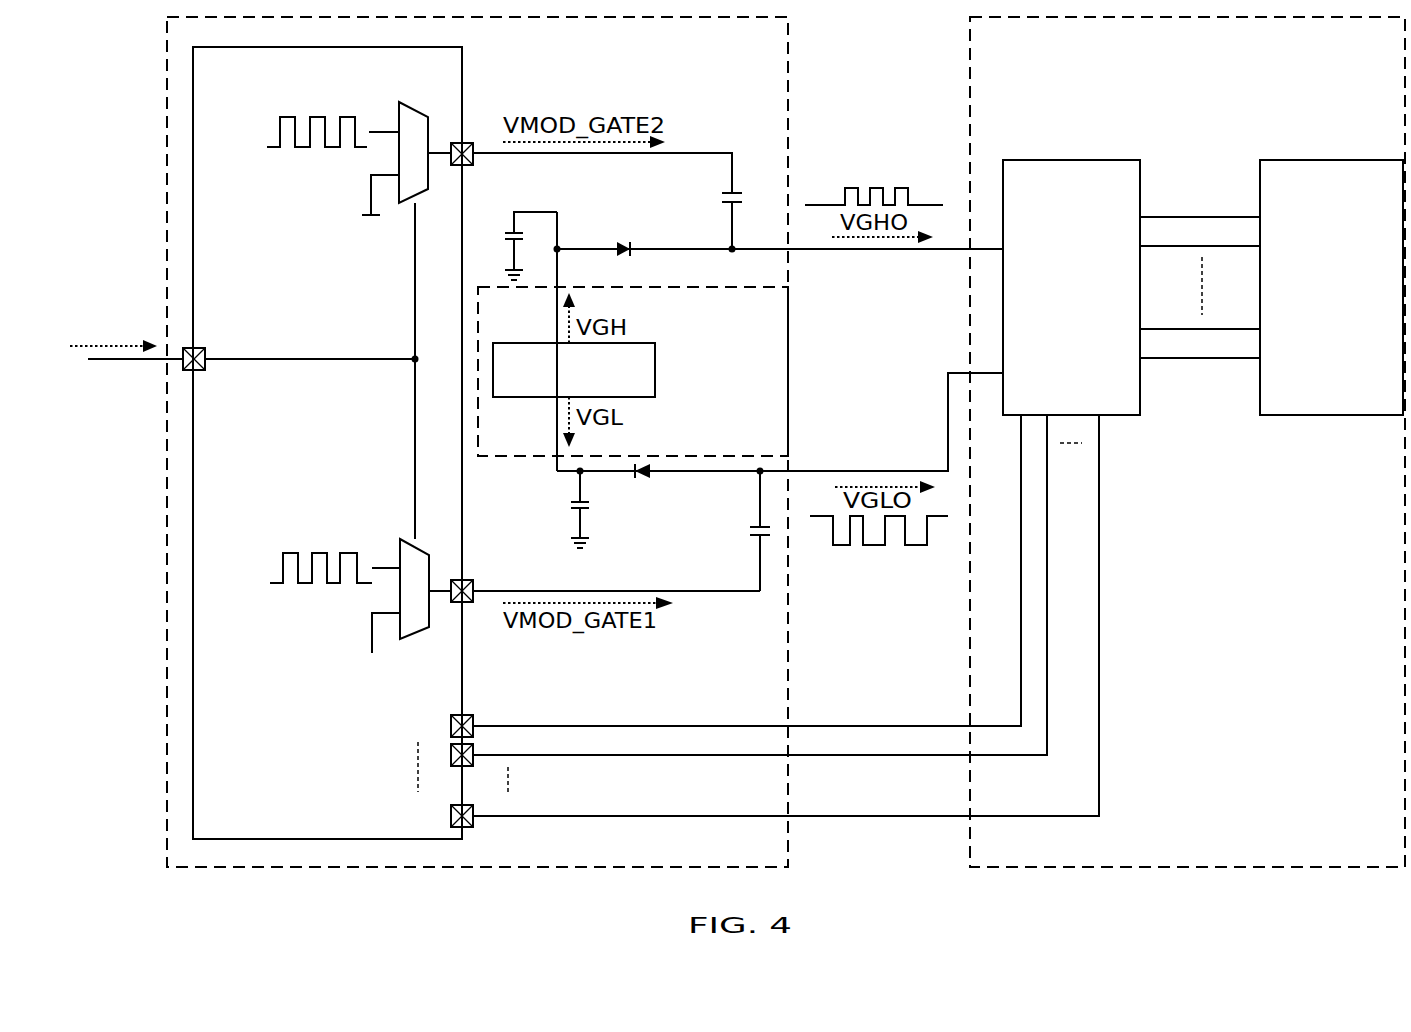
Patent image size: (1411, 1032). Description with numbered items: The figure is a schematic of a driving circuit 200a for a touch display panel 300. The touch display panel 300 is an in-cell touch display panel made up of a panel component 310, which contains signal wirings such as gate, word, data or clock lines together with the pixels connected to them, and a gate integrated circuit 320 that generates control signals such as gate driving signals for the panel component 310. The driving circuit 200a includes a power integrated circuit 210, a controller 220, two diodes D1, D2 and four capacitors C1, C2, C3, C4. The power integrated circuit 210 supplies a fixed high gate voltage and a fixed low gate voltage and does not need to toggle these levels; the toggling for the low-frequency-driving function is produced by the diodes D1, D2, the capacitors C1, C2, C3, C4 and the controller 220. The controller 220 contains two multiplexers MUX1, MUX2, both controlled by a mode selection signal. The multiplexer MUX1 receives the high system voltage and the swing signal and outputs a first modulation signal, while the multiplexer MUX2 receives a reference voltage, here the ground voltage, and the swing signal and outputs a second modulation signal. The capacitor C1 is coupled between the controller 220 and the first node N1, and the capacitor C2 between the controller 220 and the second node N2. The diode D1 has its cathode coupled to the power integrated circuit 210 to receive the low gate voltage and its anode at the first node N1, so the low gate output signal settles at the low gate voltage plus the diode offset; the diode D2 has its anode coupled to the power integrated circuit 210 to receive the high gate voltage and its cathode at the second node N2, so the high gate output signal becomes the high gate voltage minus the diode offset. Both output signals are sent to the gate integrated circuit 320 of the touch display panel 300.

The driving circuit 200a is at (788, 77).
The power integrated circuit 210 is at (655, 362).
The controller 220 is at (462, 90).
The touch display panel 300 is at (970, 90).
The panel component 310 is at (1290, 160).
The gate integrated circuit 320 is at (1105, 160).
The multiplexer MUX1 is at (398, 557).
The multiplexer MUX2 is at (408, 200).
The first node N1 is at (760, 471).
The second node N2 is at (732, 249).
The capacitor C1 is at (745, 531).
The capacitor C2 is at (748, 200).
The capacitor C3 is at (564, 508).
The capacitor C4 is at (516, 246).
The diode D1 is at (636, 488).
The diode D2 is at (626, 235).